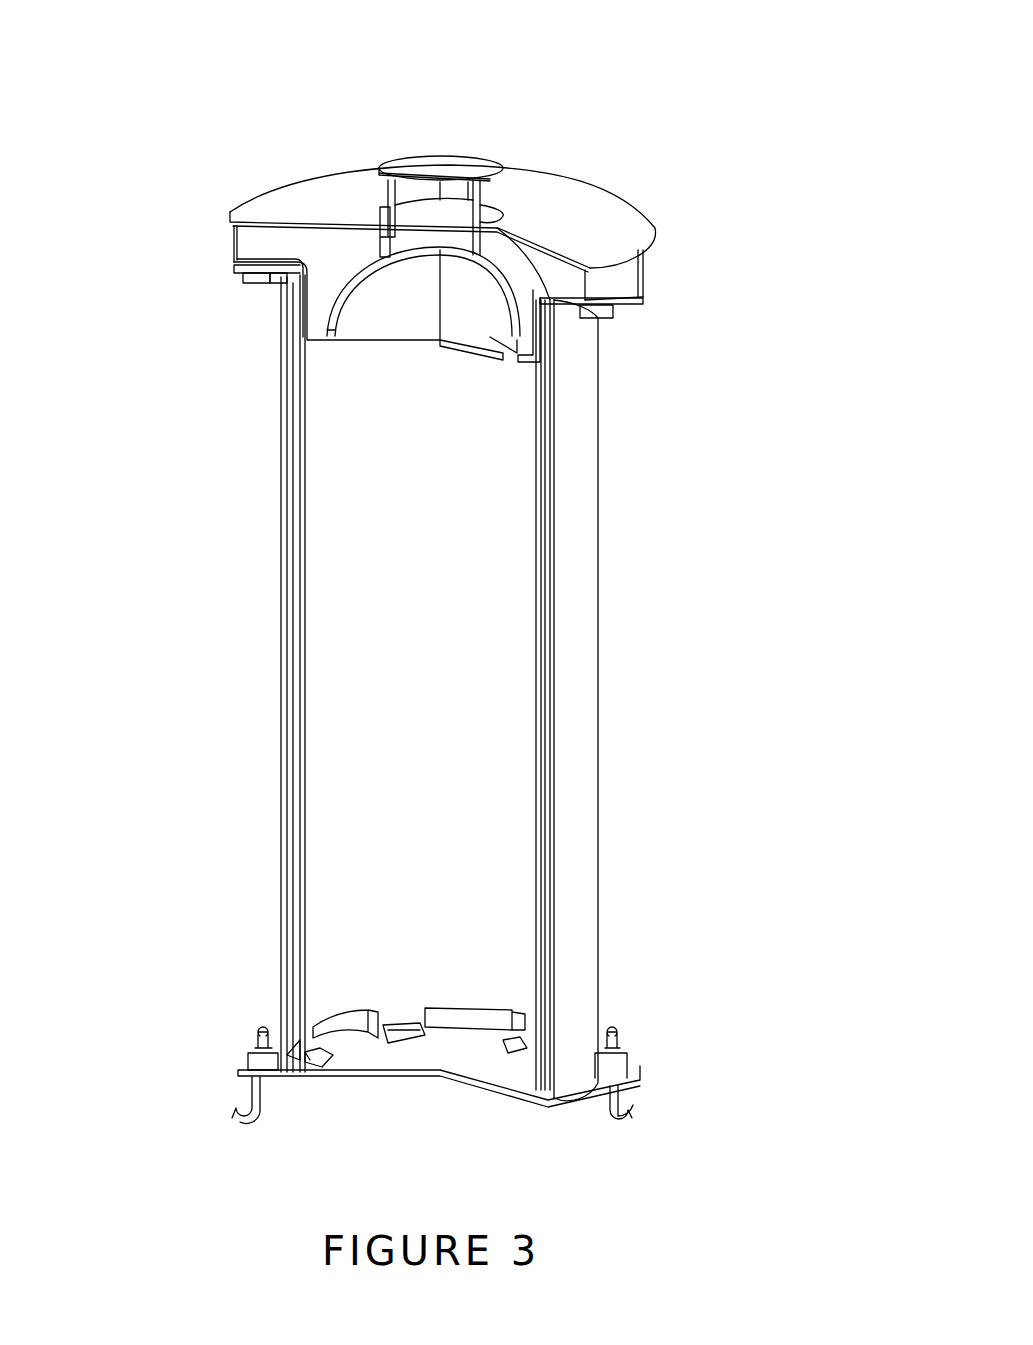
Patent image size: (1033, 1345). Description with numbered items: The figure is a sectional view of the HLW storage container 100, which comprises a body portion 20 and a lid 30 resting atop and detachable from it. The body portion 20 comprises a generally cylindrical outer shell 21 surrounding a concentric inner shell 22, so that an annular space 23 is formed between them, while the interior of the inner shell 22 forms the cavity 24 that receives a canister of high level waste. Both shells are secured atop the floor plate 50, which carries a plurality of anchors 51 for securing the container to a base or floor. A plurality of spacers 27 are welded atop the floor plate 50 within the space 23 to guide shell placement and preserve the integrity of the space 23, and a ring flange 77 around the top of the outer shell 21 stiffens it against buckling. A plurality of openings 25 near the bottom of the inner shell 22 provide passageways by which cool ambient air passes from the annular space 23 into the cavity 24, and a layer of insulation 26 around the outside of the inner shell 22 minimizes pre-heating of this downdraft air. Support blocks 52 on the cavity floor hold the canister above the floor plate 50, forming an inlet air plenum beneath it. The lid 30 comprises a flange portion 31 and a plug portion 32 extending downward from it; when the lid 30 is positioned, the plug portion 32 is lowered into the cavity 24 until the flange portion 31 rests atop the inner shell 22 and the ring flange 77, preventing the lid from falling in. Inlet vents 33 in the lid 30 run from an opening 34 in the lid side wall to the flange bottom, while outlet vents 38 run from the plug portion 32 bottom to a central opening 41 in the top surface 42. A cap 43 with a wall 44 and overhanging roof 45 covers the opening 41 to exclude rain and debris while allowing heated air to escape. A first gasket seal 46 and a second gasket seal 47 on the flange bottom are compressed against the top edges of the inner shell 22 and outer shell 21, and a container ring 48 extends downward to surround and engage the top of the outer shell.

The HLW storage container 100 is at (190, 122).
The body portion 20 is at (640, 648).
The outer shell 21 is at (556, 450).
The inner shell 22 is at (305, 730).
The space 23 is at (281, 578).
The cavity 24 is at (413, 776).
The openings 25 is at (488, 1005).
The layer of insulation 26 is at (548, 345).
The spacers 27 is at (292, 1060).
The lid 30 is at (668, 215).
The flange portion 31 is at (256, 238).
The plug portion 32 is at (385, 328).
The inlet vents 33 is at (230, 266).
The opening 34 is at (233, 258).
The outlet vents 38 is at (357, 277).
The opening 41 is at (508, 182).
The top surface 42 is at (636, 212).
The cap 43 is at (420, 150).
The wall 44 is at (378, 195).
The roof 45 is at (444, 158).
The first gasket seal 46 is at (590, 273).
The second gasket seal 47 is at (254, 240).
The container ring 48 is at (250, 283).
The floor plate 50 is at (513, 1077).
The anchors 51 is at (245, 1112).
The support blocks 52 is at (523, 1027).
The ring flange 77 is at (273, 283).